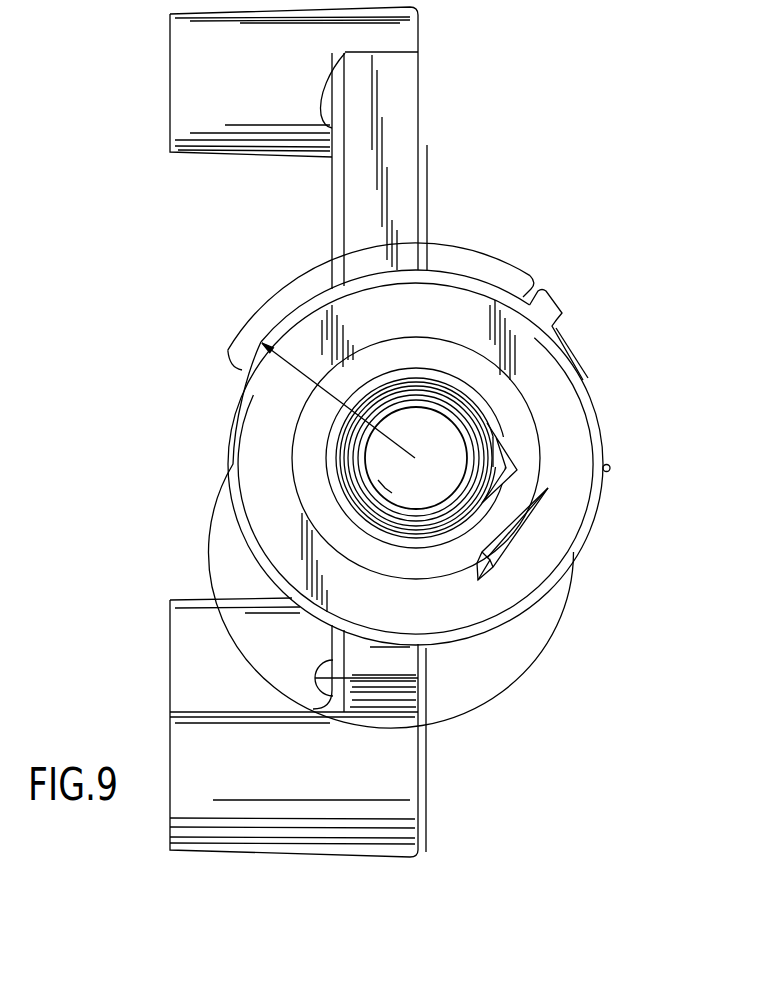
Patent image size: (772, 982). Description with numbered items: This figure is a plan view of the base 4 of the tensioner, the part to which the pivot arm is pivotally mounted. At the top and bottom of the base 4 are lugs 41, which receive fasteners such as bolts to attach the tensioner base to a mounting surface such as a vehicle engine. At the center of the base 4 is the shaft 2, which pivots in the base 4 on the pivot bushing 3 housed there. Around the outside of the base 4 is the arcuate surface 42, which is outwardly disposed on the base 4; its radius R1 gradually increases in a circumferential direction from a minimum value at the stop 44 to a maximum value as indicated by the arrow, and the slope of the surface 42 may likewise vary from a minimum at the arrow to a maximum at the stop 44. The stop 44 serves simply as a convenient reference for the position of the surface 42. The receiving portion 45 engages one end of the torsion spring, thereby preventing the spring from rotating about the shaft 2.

The shaft 2 is at (415, 458).
The pivot bushing 3 is at (487, 465).
The base 4 is at (382, 432).
The lugs 41 is at (192, 86).
The surface 42 is at (270, 300).
The stop 44 is at (548, 303).
The receiving portion 45 is at (500, 518).
The radius R1 is at (293, 442).